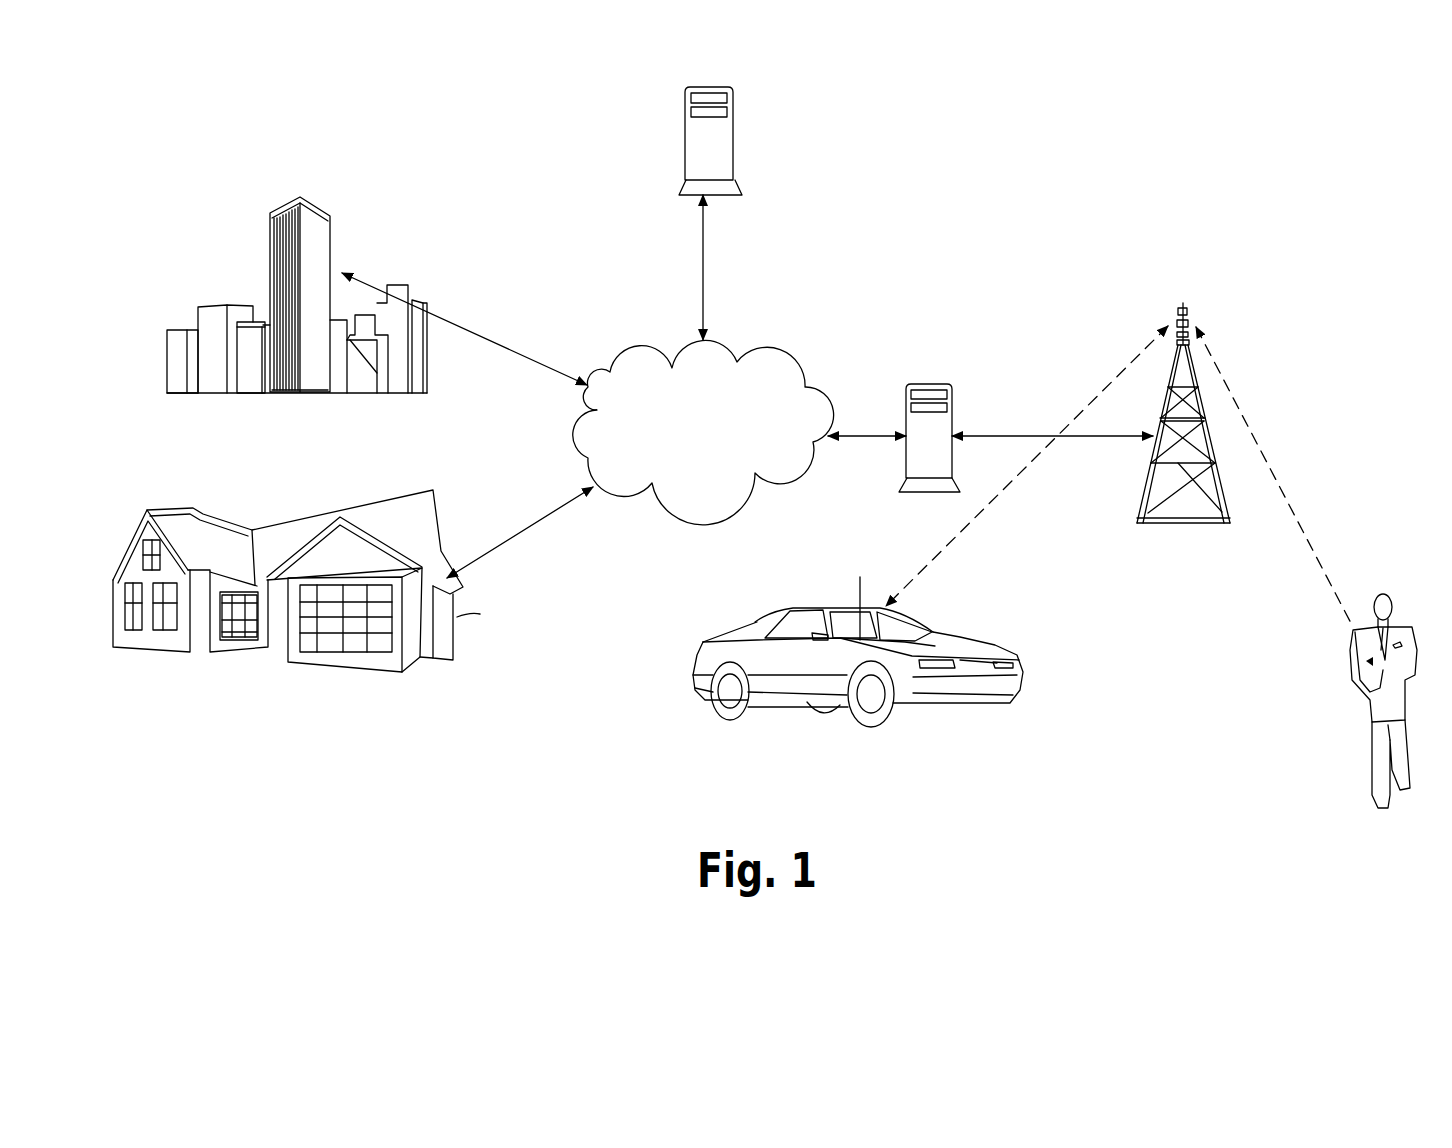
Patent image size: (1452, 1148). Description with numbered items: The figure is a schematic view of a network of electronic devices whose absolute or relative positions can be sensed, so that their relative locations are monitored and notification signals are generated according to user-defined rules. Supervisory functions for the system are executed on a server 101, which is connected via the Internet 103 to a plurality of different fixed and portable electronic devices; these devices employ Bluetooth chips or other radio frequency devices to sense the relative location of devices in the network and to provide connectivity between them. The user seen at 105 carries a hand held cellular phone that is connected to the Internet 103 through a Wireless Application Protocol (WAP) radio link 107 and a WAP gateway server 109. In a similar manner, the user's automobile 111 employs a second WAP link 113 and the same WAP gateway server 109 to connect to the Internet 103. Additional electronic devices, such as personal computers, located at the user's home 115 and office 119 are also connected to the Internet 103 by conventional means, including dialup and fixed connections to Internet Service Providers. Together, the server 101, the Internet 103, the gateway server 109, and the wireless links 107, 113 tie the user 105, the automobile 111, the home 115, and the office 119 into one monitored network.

The server 101 is at (724, 152).
The Internet 103 is at (796, 362).
The user 105 is at (1367, 710).
The Wireless Application Protocol (WAP) radio link 107 is at (1320, 565).
The WAP gateway server 109 is at (945, 382).
The automobile 111 is at (756, 620).
The second WAP link 113 is at (1027, 470).
The home 115 is at (470, 612).
The office 119 is at (322, 240).